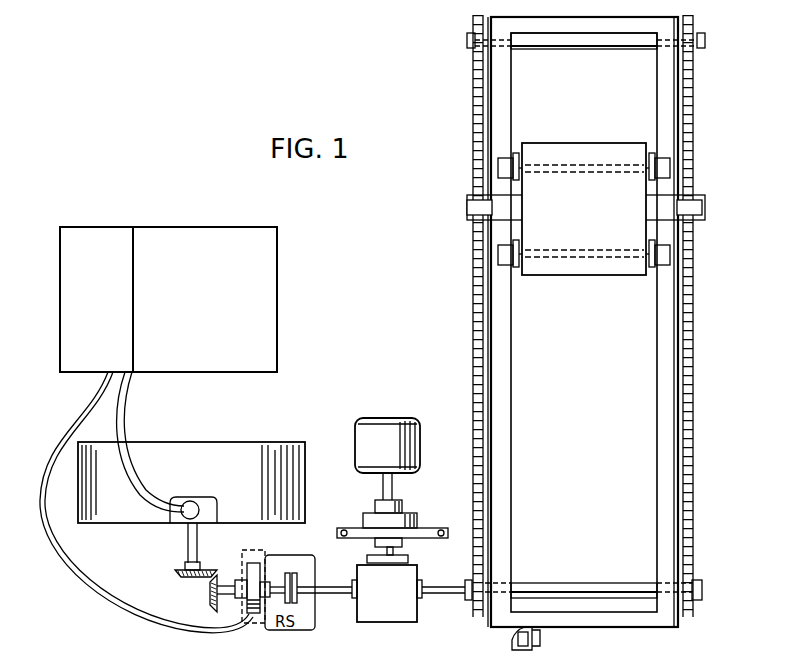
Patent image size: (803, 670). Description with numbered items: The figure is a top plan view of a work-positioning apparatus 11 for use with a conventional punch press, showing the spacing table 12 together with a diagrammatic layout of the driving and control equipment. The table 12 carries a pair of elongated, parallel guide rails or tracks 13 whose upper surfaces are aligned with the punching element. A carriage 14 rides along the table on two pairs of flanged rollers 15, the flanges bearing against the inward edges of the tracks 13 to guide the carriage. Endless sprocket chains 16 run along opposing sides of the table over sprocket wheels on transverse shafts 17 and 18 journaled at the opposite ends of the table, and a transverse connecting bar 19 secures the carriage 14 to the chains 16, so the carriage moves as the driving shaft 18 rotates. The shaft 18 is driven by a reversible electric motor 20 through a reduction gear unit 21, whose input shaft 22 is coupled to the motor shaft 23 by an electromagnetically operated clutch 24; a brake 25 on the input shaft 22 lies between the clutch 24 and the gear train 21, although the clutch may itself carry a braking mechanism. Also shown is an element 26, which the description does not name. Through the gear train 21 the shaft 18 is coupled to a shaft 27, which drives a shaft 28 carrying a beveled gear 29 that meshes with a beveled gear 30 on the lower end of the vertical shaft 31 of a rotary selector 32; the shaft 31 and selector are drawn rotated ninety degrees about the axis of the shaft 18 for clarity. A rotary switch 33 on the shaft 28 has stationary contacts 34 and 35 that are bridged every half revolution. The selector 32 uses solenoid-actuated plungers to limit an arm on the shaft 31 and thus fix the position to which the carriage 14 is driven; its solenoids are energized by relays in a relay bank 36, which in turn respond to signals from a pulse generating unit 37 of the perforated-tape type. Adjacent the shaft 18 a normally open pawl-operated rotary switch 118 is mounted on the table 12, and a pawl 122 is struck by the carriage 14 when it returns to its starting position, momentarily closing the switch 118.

The work-positioning apparatus 11 is at (708, 617).
The spacing table 12 is at (698, 455).
The guide rails or tracks 13 is at (511, 414).
The carriage 14 is at (569, 275).
The flanged wheels or rollers 15 is at (510, 155).
The endless sprocket chains 16 is at (473, 313).
The transverse shaft 17 is at (573, 48).
The driving shaft 18 is at (581, 583).
The transverse connecting bar 19 is at (492, 200).
The reversible electric motor 20 is at (384, 428).
The reduction gear unit 21 is at (376, 622).
The input shaft 22 is at (398, 555).
The motor shaft 23 is at (393, 489).
The electromagnetically operated clutch 24 is at (361, 514).
The brake 25 is at (367, 558).
The output shaft 26 is at (428, 598).
The shaft 27 is at (327, 595).
The shaft 28 is at (240, 580).
The beveled gear 29 is at (208, 598).
The beveled gear 30 is at (180, 572).
The vertical shaft 31 is at (188, 548).
The rotary selector 32 is at (232, 440).
The rotary switch 33 is at (259, 551).
The stationary contact 34 is at (256, 565).
The stationary contact 35 is at (253, 620).
The relay bank 36 is at (60, 300).
The pulse generating unit 37 is at (277, 300).
The pawl-operated rotary switch 118 is at (544, 639).
The pawl 122 is at (512, 637).